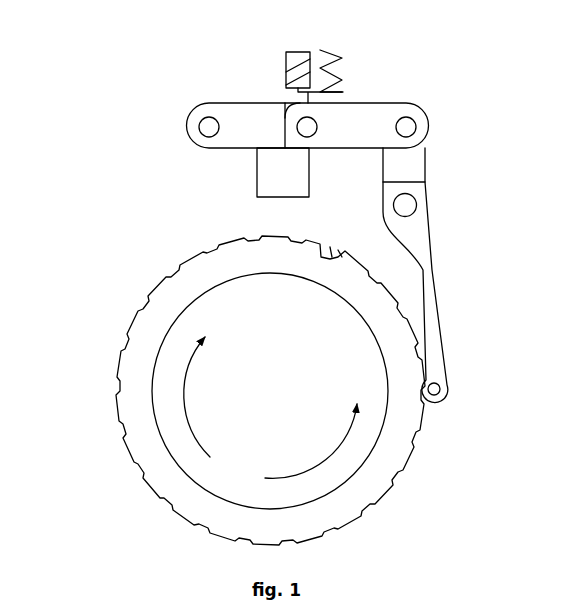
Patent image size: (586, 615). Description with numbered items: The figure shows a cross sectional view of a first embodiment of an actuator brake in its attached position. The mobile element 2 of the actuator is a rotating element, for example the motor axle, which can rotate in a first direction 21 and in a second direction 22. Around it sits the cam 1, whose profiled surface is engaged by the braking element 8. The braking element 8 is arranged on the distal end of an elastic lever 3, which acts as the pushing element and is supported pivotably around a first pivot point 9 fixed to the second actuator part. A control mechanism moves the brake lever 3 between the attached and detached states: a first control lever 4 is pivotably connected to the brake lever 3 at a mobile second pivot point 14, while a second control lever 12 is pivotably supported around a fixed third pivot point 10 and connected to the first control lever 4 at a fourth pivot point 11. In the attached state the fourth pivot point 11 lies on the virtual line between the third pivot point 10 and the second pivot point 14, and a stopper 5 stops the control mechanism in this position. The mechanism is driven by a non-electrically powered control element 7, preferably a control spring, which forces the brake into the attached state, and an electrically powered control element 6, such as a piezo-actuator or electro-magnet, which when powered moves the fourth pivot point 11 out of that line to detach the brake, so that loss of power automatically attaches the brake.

The cam 1 is at (143, 297).
The mobile element 2 is at (152, 421).
The elastic lever 3 is at (442, 345).
The first control lever 4 is at (364, 124).
The stopper 5 is at (257, 186).
The electrically powered control element 6 is at (286, 63).
The non-electrically powered control element 7 is at (343, 60).
The braking element 8 is at (442, 390).
The first pivot point 9 is at (405, 205).
The third pivot point 10 is at (198, 128).
The fourth pivot point 11 is at (313, 121).
The second control lever 12 is at (239, 116).
The second pivot point 14 is at (412, 128).
The first direction 21 is at (186, 413).
The second direction 22 is at (327, 456).